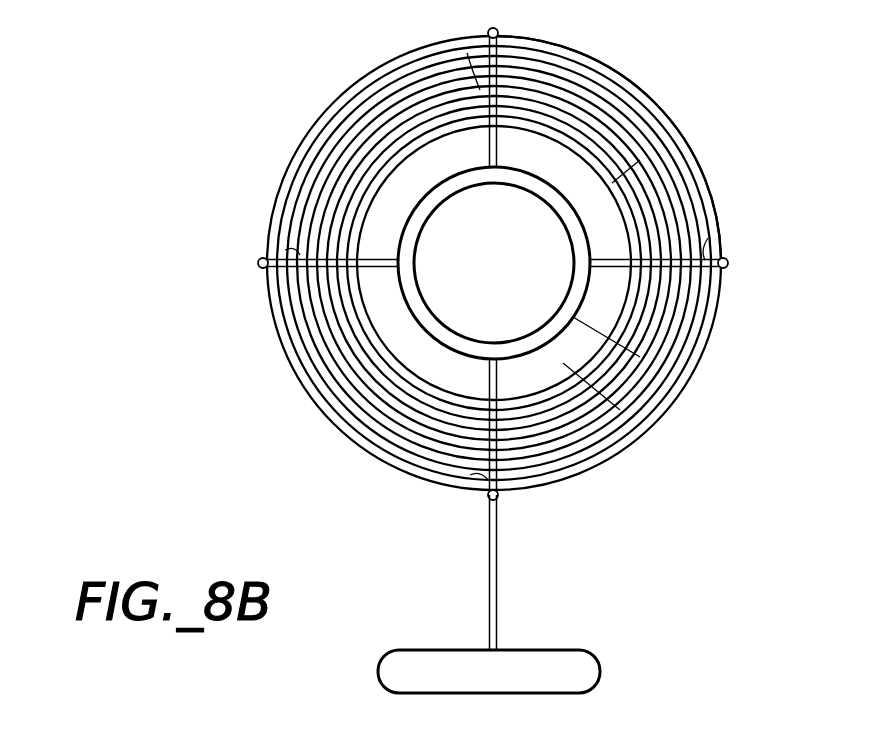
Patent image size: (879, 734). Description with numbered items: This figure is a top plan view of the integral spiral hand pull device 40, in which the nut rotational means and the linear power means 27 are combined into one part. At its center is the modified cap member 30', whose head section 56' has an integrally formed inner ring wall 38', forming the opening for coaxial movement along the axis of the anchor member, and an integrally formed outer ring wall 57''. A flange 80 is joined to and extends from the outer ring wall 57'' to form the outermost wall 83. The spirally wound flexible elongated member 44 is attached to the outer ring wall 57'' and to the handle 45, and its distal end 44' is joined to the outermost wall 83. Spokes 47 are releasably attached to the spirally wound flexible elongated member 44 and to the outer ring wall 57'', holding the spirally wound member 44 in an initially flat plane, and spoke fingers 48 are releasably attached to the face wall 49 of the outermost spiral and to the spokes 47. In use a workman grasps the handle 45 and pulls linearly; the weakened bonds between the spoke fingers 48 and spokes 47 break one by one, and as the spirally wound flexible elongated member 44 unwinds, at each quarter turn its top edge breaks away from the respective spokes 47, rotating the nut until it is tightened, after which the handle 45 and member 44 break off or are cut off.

The integral spiral hand pull device 40 is at (318, 85).
The spoke 47 is at (467, 53).
The spoke finger 48 is at (490, 30).
The face wall 49 is at (540, 40).
The modified cap member 30' is at (494, 259).
The outermost wall 83 is at (610, 183).
The ring wall 38' is at (494, 263).
The head section 56' is at (494, 263).
The outer ring wall 57'' is at (660, 364).
The flange 80 is at (620, 410).
The spirally wound flexible elongated member 44 is at (424, 274).
The distal end 44' is at (493, 264).
The linear power means 27 is at (500, 578).
The handle 45 is at (557, 650).